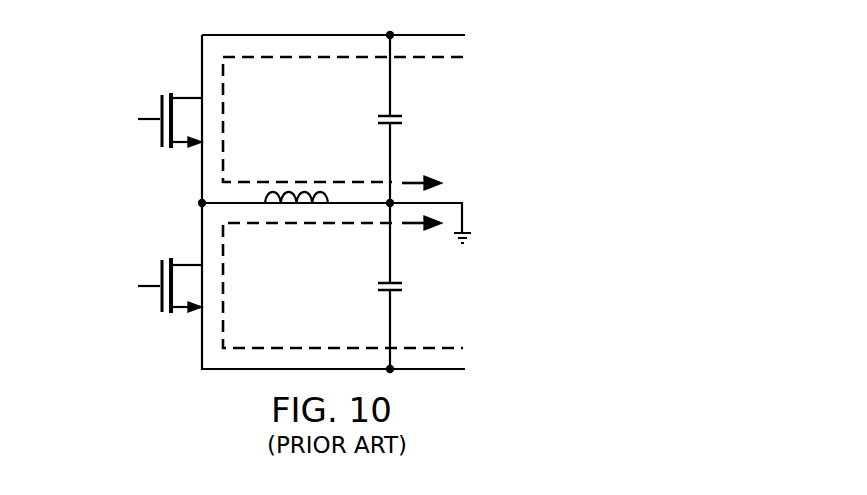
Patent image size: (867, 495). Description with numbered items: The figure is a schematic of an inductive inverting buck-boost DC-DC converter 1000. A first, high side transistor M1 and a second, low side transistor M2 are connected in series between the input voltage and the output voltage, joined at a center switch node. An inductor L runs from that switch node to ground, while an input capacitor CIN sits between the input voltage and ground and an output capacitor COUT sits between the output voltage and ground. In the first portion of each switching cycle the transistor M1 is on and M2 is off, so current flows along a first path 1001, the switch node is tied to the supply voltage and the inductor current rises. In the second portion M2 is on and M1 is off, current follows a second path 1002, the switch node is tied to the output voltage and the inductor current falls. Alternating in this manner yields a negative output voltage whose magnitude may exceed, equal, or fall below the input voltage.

The inductive inverting buck-boost DC-DC converter 1000 is at (119, 67).
The first path 1001 is at (308, 58).
The second path 1002 is at (305, 347).
The first transistor M1 is at (170, 108).
The second transistor M2 is at (170, 274).
The inductor L is at (296, 181).
The input capacitor CIN is at (407, 120).
The output capacitor COUT is at (418, 287).